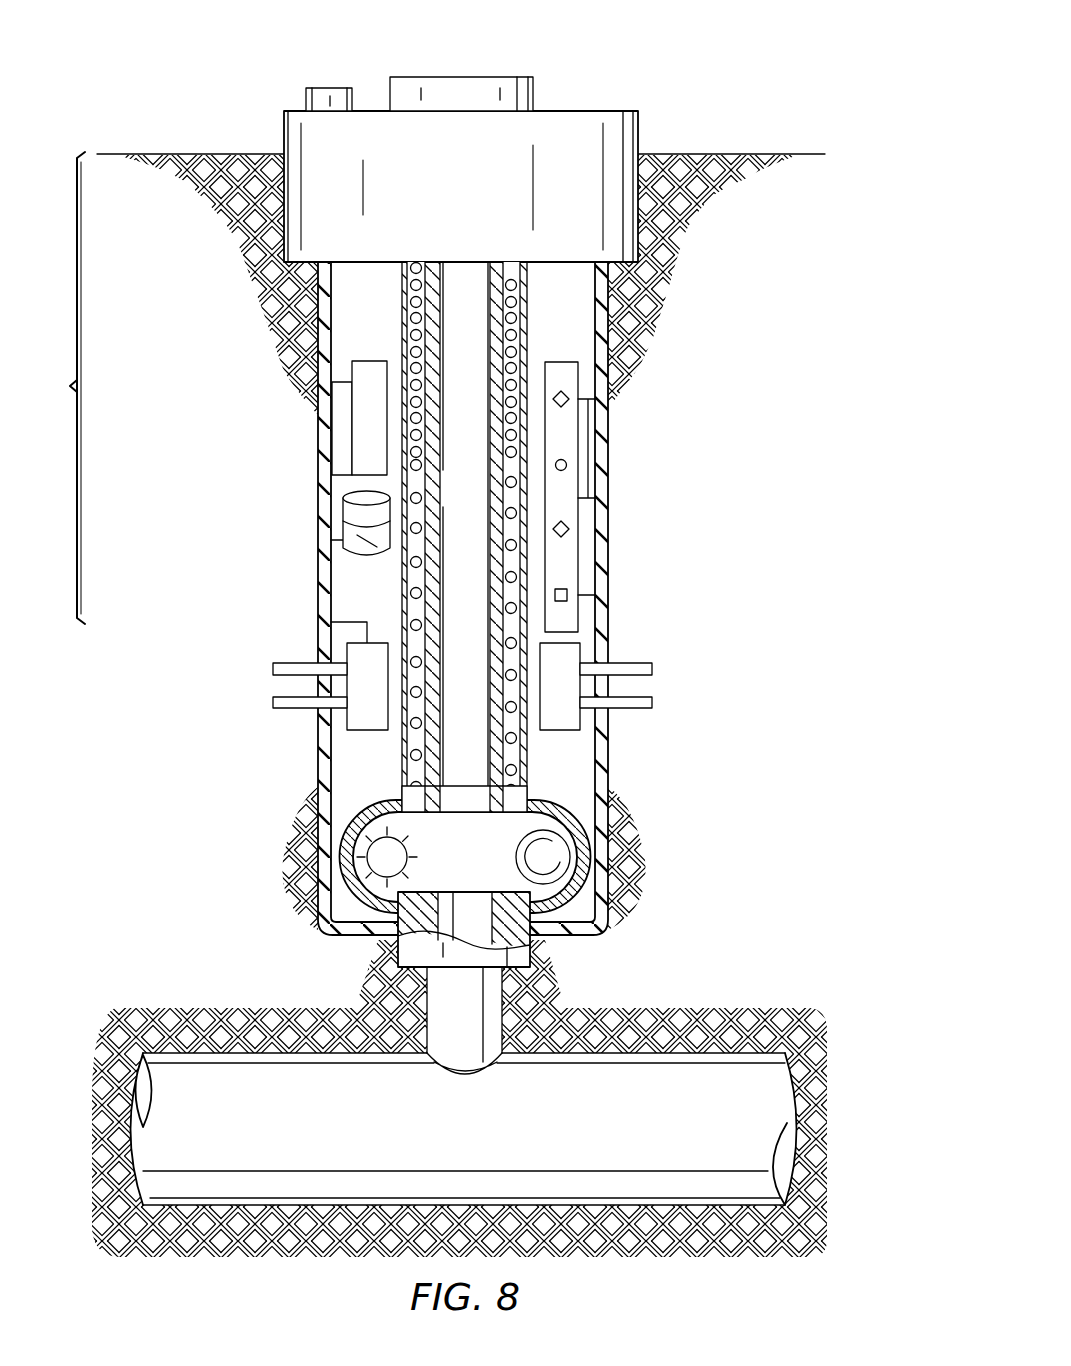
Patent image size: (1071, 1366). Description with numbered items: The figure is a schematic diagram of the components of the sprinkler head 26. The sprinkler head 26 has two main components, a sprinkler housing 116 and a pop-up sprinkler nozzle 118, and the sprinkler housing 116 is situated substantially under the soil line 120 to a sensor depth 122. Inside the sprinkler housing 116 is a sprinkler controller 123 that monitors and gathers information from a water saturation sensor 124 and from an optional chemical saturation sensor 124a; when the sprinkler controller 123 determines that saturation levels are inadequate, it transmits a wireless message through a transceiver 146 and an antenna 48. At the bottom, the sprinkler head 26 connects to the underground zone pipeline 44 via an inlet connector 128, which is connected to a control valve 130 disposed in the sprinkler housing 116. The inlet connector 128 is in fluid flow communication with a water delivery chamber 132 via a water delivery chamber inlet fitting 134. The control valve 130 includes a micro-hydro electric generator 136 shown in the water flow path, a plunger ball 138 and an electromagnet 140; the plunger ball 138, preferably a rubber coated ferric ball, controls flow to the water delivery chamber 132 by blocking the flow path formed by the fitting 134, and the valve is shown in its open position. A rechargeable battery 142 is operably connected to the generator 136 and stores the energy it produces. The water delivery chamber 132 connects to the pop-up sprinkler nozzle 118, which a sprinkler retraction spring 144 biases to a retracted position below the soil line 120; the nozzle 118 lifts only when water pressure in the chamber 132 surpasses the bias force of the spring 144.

The sprinkler head 26 is at (612, 76).
The antenna 48 is at (325, 88).
The pop-up sprinkler nozzle 118 is at (483, 85).
The soil line 120 is at (752, 153).
The sensor depth 122 is at (55, 388).
The sprinkler housing 116 is at (610, 445).
The sprinkler retraction spring 144 is at (548, 298).
The transceiver 146 is at (360, 361).
The sprinkler controller 123 is at (563, 361).
The water delivery chamber 132 is at (484, 501).
The rechargeable battery 142 is at (368, 560).
The water saturation sensor 124 is at (286, 660).
The chemical saturation sensor 124a is at (644, 660).
The water delivery chamber inlet fitting 134 is at (403, 797).
The plunger ball 138 is at (555, 800).
The electromagnet 140 is at (340, 833).
The control valve 130 is at (490, 864).
The micro-hydro electric generator 136 is at (377, 880).
The inlet connector 128 is at (533, 957).
The underground zone pipeline 44 is at (487, 1147).